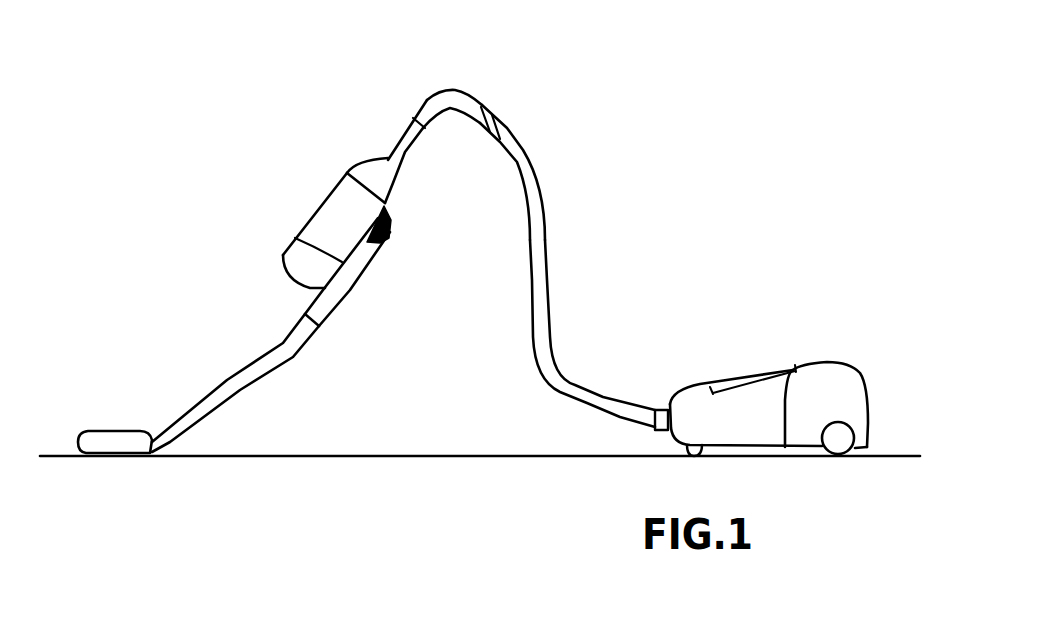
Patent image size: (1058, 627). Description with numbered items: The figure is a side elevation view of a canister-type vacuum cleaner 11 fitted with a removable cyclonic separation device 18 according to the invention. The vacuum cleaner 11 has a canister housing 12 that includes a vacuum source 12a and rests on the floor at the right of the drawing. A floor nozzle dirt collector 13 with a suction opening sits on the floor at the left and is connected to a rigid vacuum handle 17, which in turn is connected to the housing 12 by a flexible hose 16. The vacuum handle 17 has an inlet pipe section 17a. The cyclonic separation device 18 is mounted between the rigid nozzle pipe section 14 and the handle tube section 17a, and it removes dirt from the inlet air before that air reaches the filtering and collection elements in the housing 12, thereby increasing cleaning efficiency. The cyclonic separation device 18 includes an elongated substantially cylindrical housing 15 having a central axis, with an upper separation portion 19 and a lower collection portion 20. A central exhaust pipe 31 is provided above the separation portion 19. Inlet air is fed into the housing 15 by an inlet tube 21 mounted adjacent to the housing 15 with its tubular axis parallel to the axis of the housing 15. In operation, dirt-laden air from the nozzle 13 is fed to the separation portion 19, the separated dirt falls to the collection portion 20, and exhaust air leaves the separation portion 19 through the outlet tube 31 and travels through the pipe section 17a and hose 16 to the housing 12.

The canister-type vacuum cleaner 11 is at (673, 150).
The canister housing 12 is at (775, 357).
The vacuum source 12a is at (853, 388).
The floor nozzle dirt collector 13 is at (118, 457).
The rigid nozzle pipe section 14 is at (204, 412).
The elongated substantially cylindrical housing 15 is at (288, 191).
The flexible hose 16 is at (552, 292).
The rigid vacuum handle 17 is at (476, 101).
The inlet pipe section 17a is at (430, 100).
The cyclonic separation device 18 is at (297, 220).
The upper separation portion 19 is at (348, 222).
The lower collection portion 20 is at (287, 245).
The inlet tube 21 is at (350, 283).
The central exhaust pipe 31 is at (410, 155).